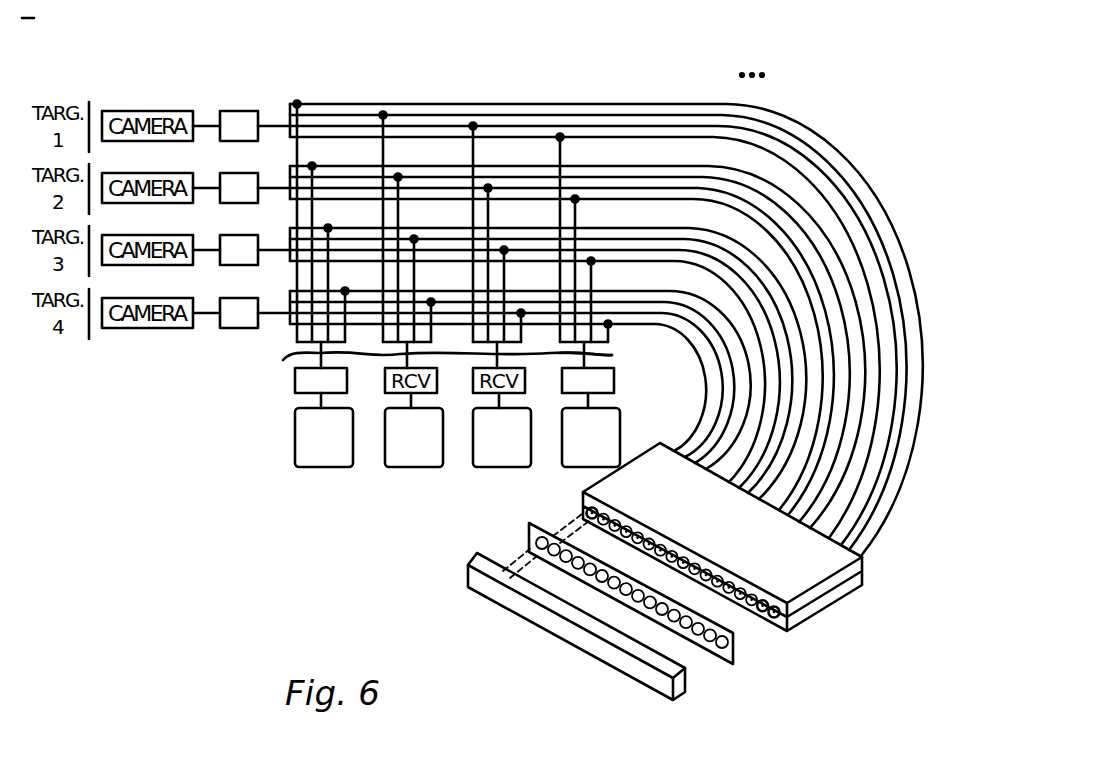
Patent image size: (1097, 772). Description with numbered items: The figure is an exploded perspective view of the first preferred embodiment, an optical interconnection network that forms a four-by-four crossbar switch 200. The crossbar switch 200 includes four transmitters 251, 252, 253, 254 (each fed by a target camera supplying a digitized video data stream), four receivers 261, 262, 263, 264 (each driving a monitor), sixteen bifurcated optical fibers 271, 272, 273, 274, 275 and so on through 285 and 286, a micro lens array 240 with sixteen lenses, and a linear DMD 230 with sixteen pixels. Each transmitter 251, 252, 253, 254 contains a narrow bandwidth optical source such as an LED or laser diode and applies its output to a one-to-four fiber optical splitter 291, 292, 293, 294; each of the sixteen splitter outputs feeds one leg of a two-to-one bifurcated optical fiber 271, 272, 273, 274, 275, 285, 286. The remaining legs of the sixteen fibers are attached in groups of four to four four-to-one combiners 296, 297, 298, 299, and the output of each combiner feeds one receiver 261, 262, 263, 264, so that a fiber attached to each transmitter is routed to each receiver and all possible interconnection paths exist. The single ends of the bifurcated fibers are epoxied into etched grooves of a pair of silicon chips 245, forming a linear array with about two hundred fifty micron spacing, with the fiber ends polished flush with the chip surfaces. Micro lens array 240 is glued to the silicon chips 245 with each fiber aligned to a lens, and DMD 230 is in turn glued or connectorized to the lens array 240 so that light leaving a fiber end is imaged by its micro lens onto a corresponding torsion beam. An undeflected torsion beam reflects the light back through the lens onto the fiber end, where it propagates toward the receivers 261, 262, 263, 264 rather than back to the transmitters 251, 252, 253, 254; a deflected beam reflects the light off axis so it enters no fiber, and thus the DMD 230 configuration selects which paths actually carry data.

The crossbar switch 200 is at (233, 542).
The linear DMD 230 is at (607, 658).
The micro lens array 240 is at (748, 662).
The silicon chips 245 is at (690, 500).
The transmitter 251 is at (219, 110).
The transmitter 252 is at (221, 174).
The transmitter 253 is at (221, 265).
The transmitter 254 is at (216, 328).
The receiver 261 is at (300, 405).
The receiver 262 is at (385, 396).
The receiver 263 is at (473, 396).
The receiver 264 is at (563, 396).
The bifurcated optical fiber 271 is at (347, 104).
The bifurcated optical fiber 272 is at (418, 116).
The bifurcated optical fiber 273 is at (500, 126).
The bifurcated optical fiber 274 is at (578, 137).
The bifurcated optical fiber 275 is at (642, 165).
The bifurcated optical fiber 285 is at (748, 150).
The bifurcated optical fiber 286 is at (818, 178).
The fiber optical splitter 291 is at (285, 125).
The fiber optical splitter 292 is at (268, 187).
The fiber optical splitter 293 is at (262, 264).
The fiber optical splitter 294 is at (283, 315).
The combiner 296 is at (283, 360).
The combiner 297 is at (303, 396).
The combiner 298 is at (613, 394).
The combiner 299 is at (612, 355).